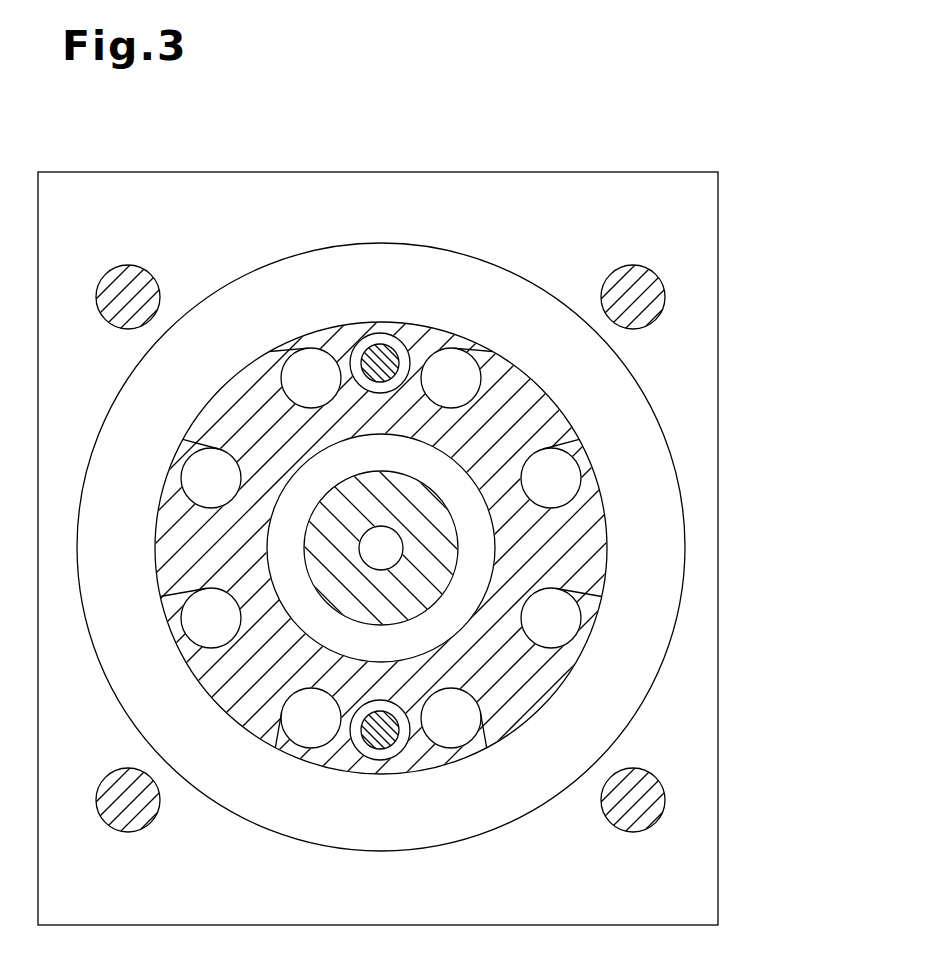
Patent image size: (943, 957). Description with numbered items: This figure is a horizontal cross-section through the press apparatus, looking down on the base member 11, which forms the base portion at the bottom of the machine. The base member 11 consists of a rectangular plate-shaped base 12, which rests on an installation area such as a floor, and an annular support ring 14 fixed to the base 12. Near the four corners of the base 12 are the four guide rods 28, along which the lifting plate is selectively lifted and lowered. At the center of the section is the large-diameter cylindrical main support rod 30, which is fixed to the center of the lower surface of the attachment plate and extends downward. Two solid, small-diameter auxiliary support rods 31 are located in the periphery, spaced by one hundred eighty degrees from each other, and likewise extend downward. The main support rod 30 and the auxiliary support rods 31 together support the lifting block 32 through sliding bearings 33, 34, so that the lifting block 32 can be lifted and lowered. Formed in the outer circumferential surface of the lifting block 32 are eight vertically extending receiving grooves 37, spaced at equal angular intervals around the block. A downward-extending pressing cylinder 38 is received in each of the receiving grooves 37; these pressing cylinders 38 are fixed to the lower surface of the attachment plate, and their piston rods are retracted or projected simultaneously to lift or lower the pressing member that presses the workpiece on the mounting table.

The base member 11 is at (426, 548).
The base 12 is at (710, 493).
The support ring 14 is at (676, 523).
The guide rods 28 is at (125, 265).
The main support rod 30 is at (383, 470).
The auxiliary support rods 31 is at (358, 334).
The lifting block 32 is at (517, 377).
The sliding bearing 33 is at (486, 550).
The sliding bearings 34 is at (392, 345).
The receiving grooves 37 is at (320, 342).
The pressing cylinders 38 is at (287, 350).